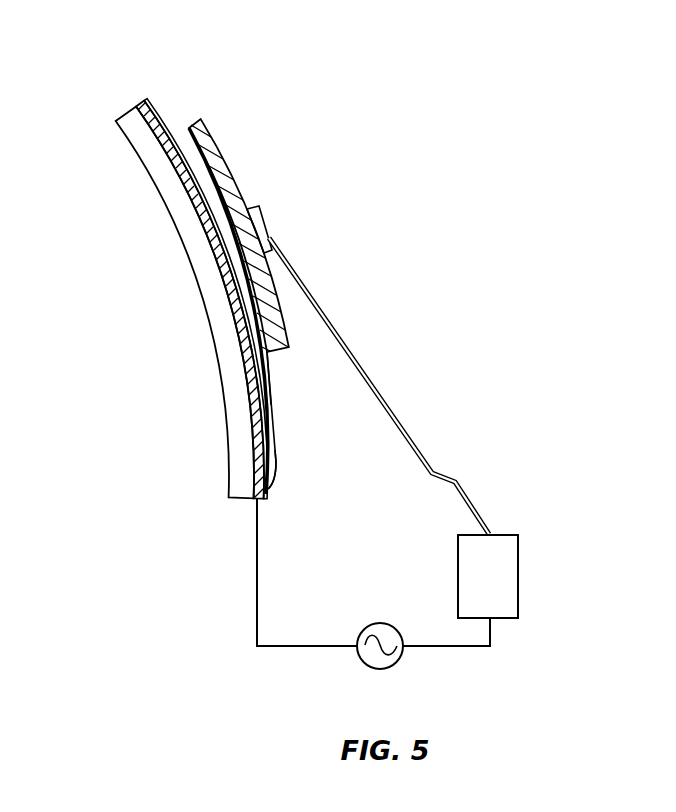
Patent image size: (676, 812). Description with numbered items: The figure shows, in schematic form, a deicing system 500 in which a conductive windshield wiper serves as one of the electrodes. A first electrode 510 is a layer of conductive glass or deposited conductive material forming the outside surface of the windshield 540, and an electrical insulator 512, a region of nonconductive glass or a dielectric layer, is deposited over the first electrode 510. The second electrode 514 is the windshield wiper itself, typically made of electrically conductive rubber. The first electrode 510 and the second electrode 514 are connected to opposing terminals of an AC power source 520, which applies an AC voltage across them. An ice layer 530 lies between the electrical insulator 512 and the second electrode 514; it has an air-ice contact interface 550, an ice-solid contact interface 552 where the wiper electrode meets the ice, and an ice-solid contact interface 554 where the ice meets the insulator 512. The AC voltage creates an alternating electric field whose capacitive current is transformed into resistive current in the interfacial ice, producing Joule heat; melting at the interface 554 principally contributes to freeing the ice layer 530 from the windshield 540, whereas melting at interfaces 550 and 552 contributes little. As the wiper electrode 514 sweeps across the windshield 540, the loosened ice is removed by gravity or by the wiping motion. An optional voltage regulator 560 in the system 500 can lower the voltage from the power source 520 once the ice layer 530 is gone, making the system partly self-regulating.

The system 500 is at (442, 169).
The first electrode 510 is at (140, 104).
The electrical insulator 512 is at (151, 105).
The second electrode 514 is at (215, 133).
The AC power source 520 is at (402, 657).
The ice layer 530 is at (267, 428).
The windshield 540 is at (160, 176).
The air-ice contact interface 550 is at (273, 396).
The ice-solid contact interface 552 is at (284, 368).
The ice-solid contact interface 554 is at (277, 499).
The voltage regulator 560 is at (507, 553).